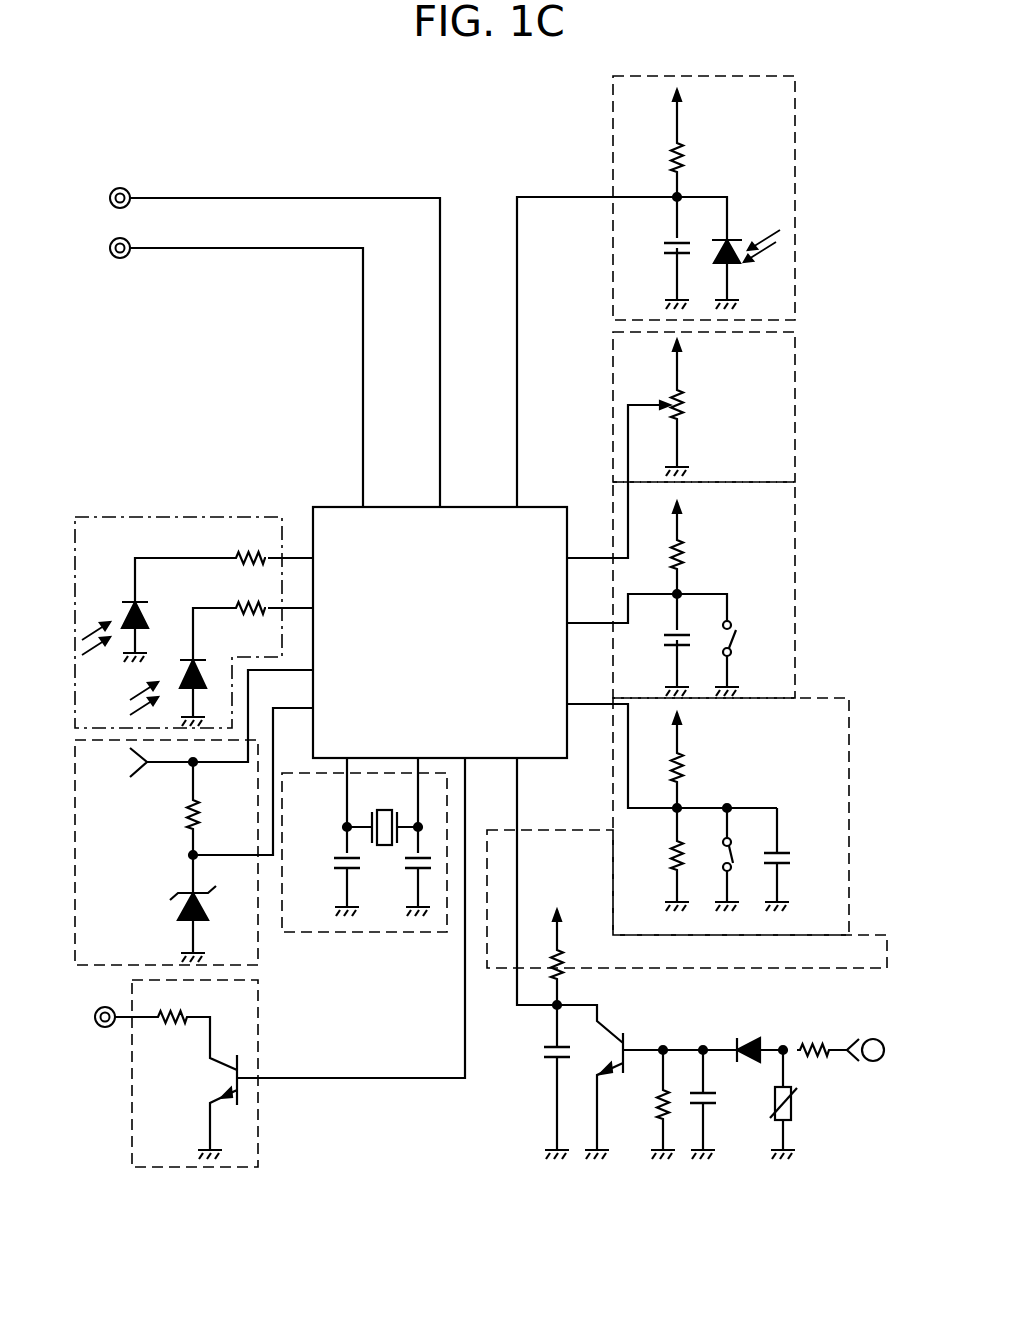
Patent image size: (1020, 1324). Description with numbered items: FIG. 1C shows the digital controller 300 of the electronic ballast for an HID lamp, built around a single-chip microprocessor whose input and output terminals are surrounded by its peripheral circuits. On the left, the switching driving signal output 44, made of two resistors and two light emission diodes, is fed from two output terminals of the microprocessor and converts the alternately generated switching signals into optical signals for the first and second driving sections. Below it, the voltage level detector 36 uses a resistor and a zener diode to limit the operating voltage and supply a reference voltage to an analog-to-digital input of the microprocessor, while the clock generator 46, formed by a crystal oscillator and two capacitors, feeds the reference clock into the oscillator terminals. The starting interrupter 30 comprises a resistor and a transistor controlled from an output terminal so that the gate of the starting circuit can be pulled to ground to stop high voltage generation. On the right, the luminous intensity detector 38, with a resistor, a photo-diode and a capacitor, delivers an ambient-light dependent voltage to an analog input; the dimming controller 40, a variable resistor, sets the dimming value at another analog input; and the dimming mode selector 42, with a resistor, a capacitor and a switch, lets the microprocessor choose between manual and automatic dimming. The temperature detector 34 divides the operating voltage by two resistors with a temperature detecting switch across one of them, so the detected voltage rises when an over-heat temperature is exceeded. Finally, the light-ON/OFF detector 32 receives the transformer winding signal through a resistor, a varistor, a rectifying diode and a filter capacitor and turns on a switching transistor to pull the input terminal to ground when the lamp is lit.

The digital controller 300 is at (459, 140).
The starting interrupter 30 is at (187, 1167).
The light-ON/OFF detector 32 is at (695, 968).
The temperature detector 34 is at (833, 698).
The voltage level detector 36 is at (250, 943).
The luminous intensity detector 38 is at (795, 163).
The dimming controller 40 is at (795, 418).
The dimming mode selector 42 is at (795, 570).
The switching driving signal output 44 is at (177, 517).
The clock generator 46 is at (362, 932).